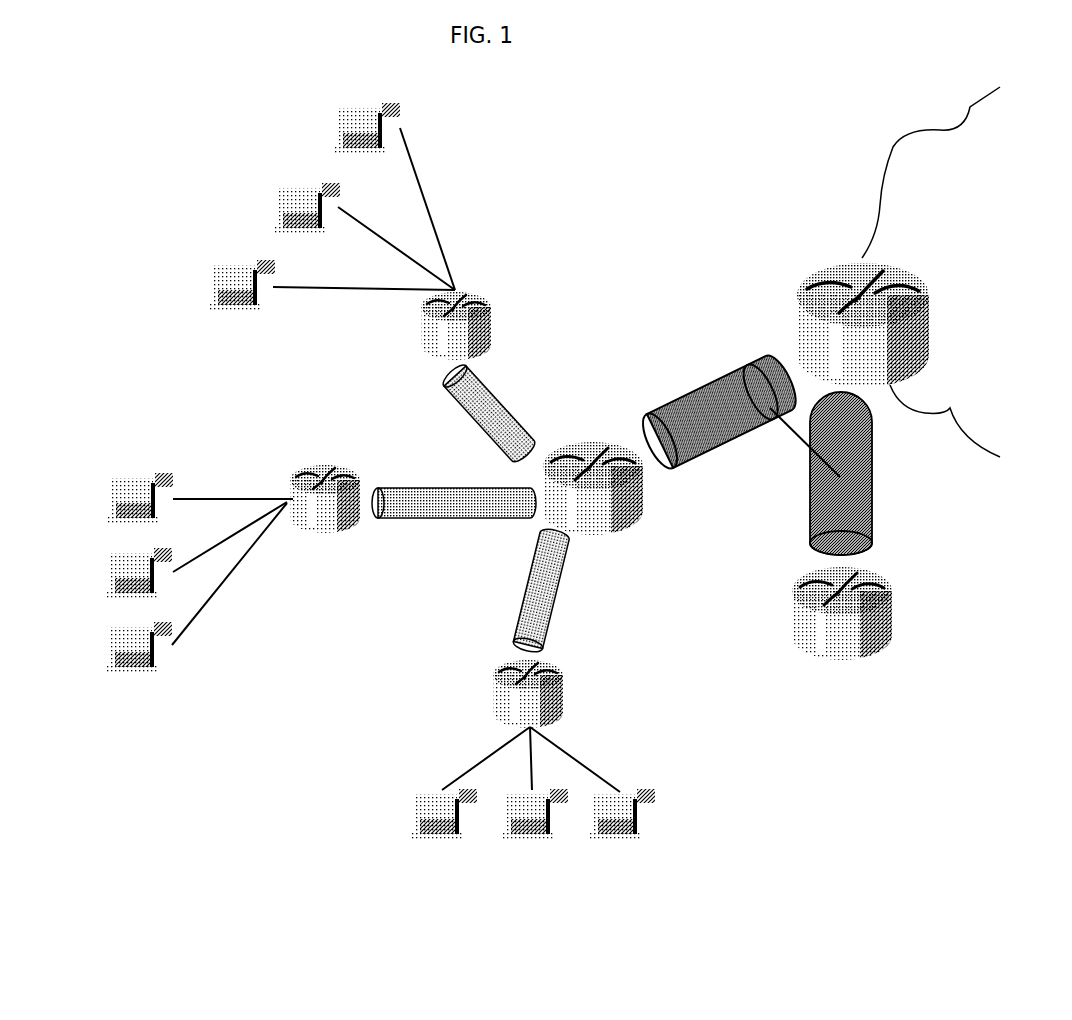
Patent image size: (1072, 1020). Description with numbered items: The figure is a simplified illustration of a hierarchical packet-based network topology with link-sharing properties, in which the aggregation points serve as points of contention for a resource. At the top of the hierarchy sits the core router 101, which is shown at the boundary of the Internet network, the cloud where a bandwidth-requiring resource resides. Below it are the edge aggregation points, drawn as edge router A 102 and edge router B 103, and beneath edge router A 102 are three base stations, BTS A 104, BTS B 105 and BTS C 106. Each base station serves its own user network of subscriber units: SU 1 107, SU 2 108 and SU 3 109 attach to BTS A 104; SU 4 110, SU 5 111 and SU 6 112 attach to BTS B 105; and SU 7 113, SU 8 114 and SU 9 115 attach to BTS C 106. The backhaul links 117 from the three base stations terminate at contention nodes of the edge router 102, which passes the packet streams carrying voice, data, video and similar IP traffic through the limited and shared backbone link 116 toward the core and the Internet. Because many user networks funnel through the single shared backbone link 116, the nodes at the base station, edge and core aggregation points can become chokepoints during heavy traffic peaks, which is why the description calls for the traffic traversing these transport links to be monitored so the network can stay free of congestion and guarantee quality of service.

The core router 101 is at (906, 309).
The edge router 102 is at (636, 506).
The edge router B 103 is at (892, 613).
The base transceiver station A 104 is at (489, 313).
The base transceiver station B 105 is at (316, 473).
The base transceiver station C 106 is at (568, 683).
The subscriber unit 1 107 is at (357, 196).
The subscriber unit 2 108 is at (325, 236).
The subscriber unit 3 109 is at (295, 286).
The subscriber unit 4 110 is at (163, 499).
The subscriber unit 5 111 is at (160, 552).
The subscriber unit 6 112 is at (160, 589).
The subscriber unit 7 113 is at (460, 811).
The subscriber unit 8 114 is at (523, 809).
The subscriber unit 9 115 is at (592, 812).
The backbone link 116 is at (718, 403).
The backhaul links 117 is at (477, 400).